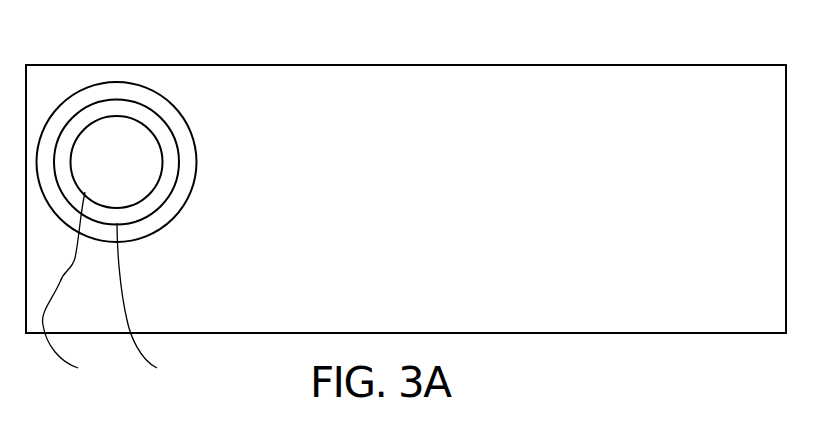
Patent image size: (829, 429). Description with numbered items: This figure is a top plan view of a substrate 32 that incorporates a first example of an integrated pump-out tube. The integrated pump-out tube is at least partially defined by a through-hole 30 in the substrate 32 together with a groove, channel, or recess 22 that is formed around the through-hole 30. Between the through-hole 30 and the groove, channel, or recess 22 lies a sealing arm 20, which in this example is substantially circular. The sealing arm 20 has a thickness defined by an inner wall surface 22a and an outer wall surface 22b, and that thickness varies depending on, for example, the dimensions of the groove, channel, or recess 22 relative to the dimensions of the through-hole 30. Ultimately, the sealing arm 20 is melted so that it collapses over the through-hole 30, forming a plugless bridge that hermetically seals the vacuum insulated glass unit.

The sealing arm 20 is at (148, 117).
The groove, channel, or recess 22 is at (183, 133).
The inner wall surface 22a is at (80, 287).
The outer wall surface 22b is at (157, 302).
The through-hole 30 is at (130, 172).
The substrate 32 is at (630, 85).